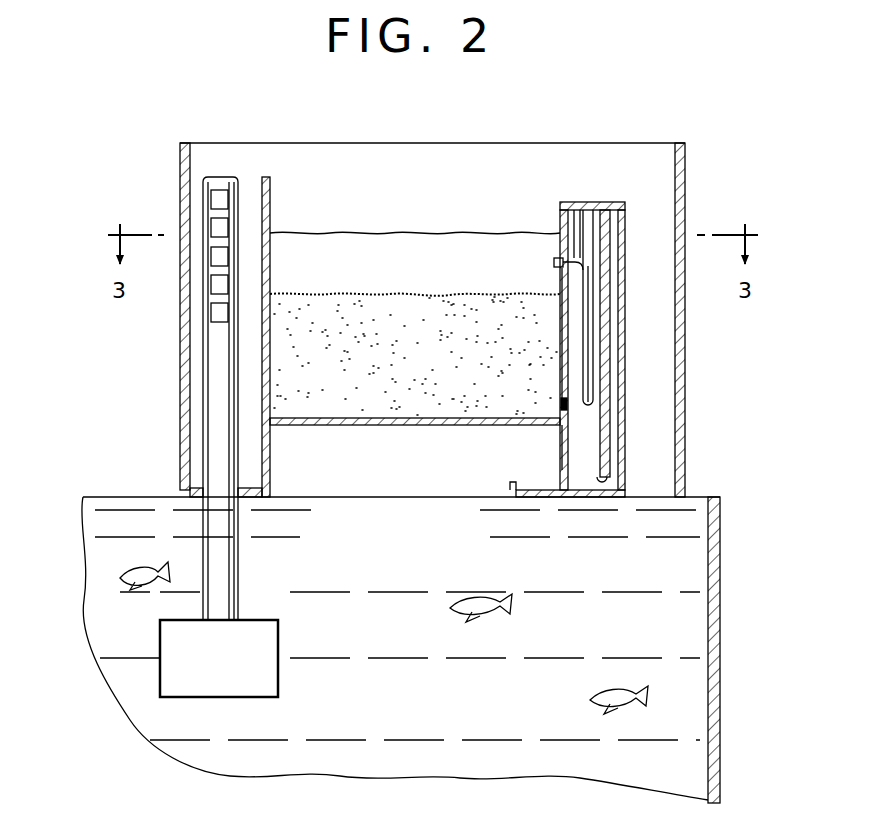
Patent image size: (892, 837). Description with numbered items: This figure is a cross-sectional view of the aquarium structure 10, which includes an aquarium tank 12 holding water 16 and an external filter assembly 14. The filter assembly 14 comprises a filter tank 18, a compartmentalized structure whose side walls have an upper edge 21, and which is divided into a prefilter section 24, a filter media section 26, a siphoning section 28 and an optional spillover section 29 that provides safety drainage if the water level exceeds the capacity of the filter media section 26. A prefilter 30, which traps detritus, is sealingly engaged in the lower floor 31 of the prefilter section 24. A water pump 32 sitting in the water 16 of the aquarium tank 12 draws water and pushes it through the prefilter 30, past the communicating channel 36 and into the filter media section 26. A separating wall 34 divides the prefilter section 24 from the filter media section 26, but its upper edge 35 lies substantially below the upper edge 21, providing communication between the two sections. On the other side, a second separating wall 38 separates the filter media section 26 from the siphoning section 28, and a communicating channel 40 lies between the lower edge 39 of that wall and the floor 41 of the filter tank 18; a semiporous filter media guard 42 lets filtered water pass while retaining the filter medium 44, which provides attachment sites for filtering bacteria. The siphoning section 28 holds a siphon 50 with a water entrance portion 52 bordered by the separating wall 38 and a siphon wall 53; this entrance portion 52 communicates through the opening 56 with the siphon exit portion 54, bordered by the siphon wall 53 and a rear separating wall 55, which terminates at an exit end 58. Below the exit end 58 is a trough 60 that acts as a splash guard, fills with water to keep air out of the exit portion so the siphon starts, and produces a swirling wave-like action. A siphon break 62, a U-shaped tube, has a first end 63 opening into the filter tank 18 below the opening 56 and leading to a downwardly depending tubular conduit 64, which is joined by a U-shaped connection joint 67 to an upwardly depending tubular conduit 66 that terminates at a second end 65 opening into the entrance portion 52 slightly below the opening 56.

The aquarium structure 10 is at (128, 449).
The aquarium tank 12 is at (718, 618).
The external filter assembly 14 is at (688, 181).
The water 16 is at (440, 697).
The filter tank 18 is at (180, 167).
The upper edge 21 is at (308, 143).
The prefilter section 24 is at (243, 177).
The filter media section 26 is at (364, 160).
The siphoning section 28 is at (591, 208).
The spillover section 29 is at (652, 213).
The prefilter 30 is at (215, 212).
The lower floor 31 is at (190, 489).
The water pump 32 is at (219, 658).
The separating wall 34 is at (263, 368).
The upper edge 35 is at (267, 173).
The communicating channel 36 is at (265, 163).
The second separating wall 38 is at (560, 238).
The lower edge 39 is at (562, 392).
The communicating channel 40 is at (561, 410).
The floor 41 is at (390, 425).
The semiporous filter media guard 42 is at (563, 430).
The filter medium 44 is at (383, 377).
The siphon 50 is at (562, 232).
The water entrance portion 52 is at (578, 342).
The siphon wall 53 is at (604, 360).
The siphon exit portion 54 is at (604, 304).
The rear separating wall 55 is at (614, 334).
The opening 56 is at (607, 208).
The exit end 58 is at (612, 487).
The trough 60 is at (554, 496).
The siphon break 62 is at (594, 380).
The first end 63 is at (554, 262).
The downwardly depending tubular conduit 64 is at (585, 298).
The second end 65 is at (578, 208).
The upwardly depending tubular conduit 66 is at (592, 240).
The U-shaped connection joint 67 is at (598, 440).